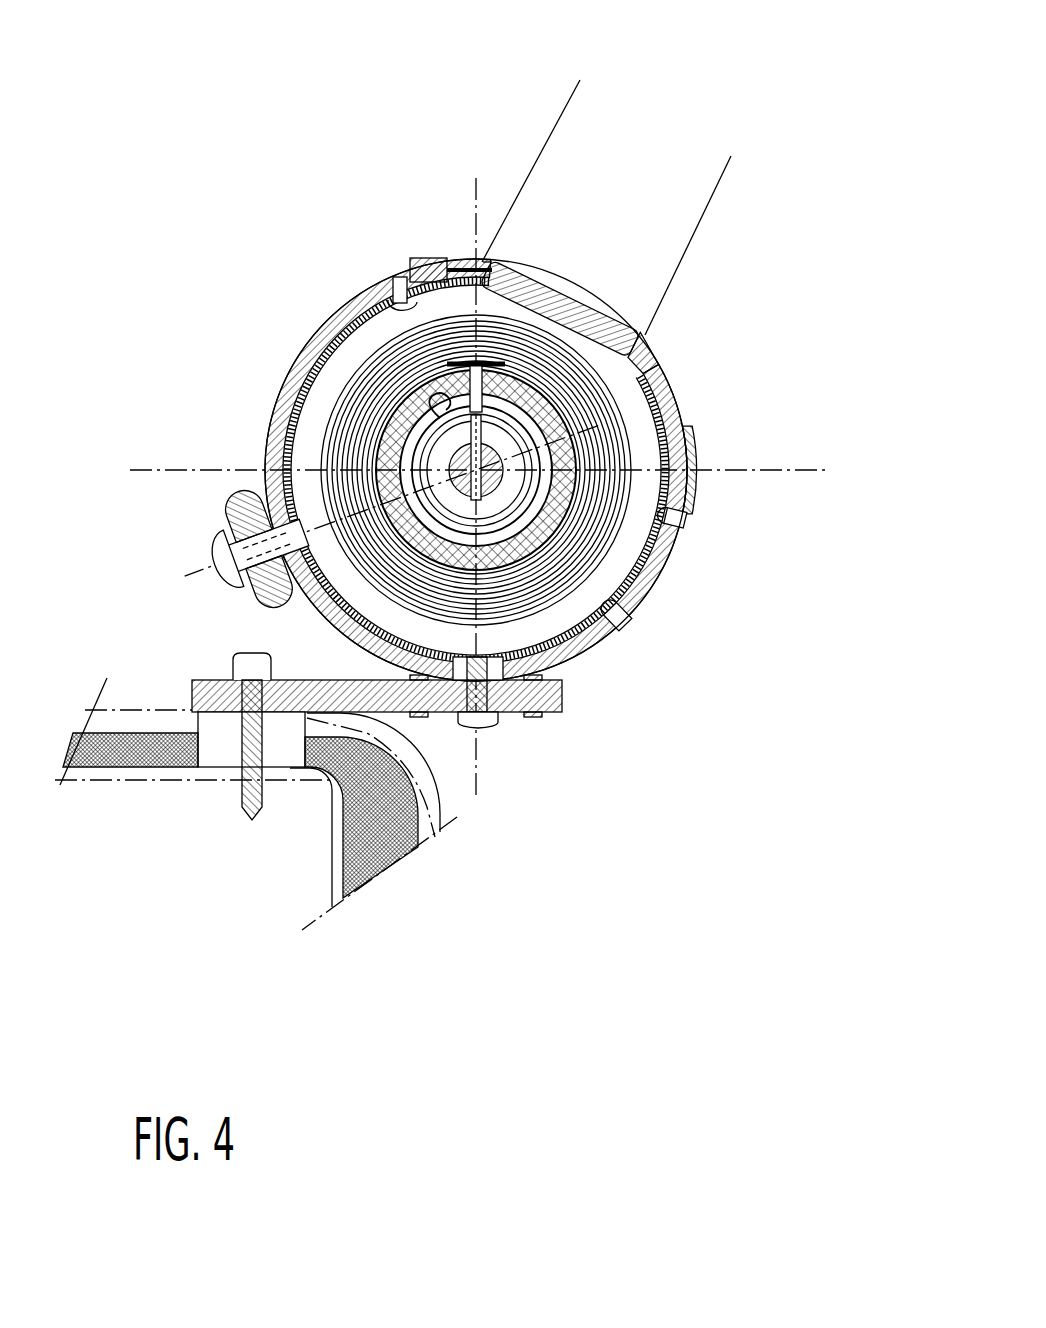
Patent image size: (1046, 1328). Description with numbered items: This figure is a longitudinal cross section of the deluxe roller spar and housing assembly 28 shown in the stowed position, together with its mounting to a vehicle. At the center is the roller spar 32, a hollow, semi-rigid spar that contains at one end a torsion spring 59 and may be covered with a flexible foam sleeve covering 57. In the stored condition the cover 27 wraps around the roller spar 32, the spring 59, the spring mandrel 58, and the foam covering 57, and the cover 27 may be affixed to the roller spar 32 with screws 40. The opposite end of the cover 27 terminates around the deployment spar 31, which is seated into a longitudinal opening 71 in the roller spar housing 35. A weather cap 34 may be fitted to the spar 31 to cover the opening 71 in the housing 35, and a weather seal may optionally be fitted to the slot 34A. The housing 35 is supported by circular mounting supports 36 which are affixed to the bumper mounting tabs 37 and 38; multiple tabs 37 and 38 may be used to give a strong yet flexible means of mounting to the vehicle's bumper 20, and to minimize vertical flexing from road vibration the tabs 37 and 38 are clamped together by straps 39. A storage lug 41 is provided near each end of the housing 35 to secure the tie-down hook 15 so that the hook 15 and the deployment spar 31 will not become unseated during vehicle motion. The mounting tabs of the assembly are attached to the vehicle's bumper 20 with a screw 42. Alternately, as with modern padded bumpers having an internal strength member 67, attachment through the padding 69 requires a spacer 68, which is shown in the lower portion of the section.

The motor assembly 28 is at (476, 356).
The slot 34A is at (555, 131).
The longitudinal opening 71 is at (727, 161).
The screws 40 is at (363, 271).
The circular mounting supports 36 is at (292, 249).
The deployment spar 31 is at (560, 269).
The weather cap 34 is at (742, 372).
The roller spar housing 35 is at (383, 456).
The flexible foam sleeve covering 57 is at (359, 470).
The torsion spring 59 is at (614, 418).
The roller spar 32 is at (593, 464).
The storage lug 41 is at (325, 500).
The cover 27 is at (562, 470).
The tie-down hook 15 is at (185, 571).
The spring mandrel 58 is at (651, 559).
The bumper mounting tab 37 is at (506, 709).
The bumper mounting tab 38 is at (694, 755).
The straps 39 is at (633, 802).
The screw 42 is at (192, 763).
The padding 69 is at (448, 868).
The vehicle's bumper 20 is at (547, 859).
The internal strength member 67 is at (446, 944).
The spacer 68 is at (400, 943).